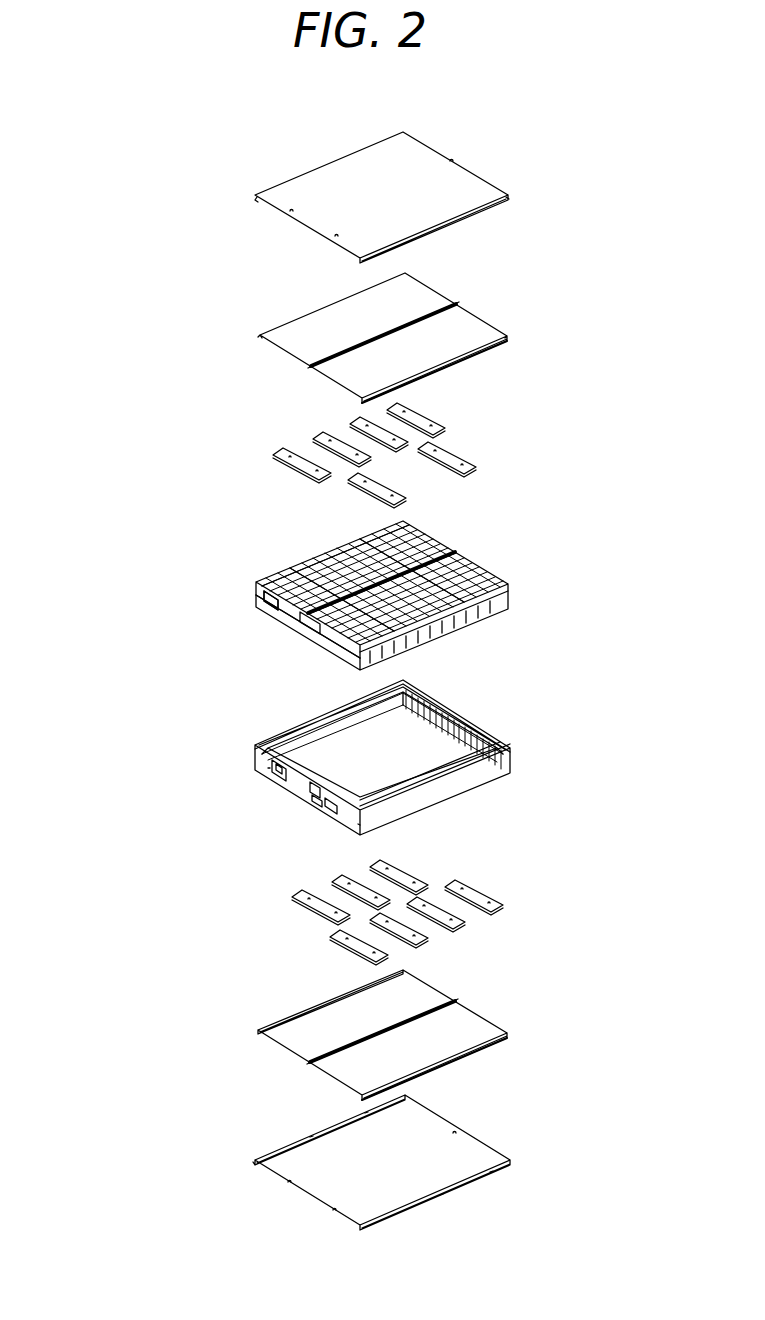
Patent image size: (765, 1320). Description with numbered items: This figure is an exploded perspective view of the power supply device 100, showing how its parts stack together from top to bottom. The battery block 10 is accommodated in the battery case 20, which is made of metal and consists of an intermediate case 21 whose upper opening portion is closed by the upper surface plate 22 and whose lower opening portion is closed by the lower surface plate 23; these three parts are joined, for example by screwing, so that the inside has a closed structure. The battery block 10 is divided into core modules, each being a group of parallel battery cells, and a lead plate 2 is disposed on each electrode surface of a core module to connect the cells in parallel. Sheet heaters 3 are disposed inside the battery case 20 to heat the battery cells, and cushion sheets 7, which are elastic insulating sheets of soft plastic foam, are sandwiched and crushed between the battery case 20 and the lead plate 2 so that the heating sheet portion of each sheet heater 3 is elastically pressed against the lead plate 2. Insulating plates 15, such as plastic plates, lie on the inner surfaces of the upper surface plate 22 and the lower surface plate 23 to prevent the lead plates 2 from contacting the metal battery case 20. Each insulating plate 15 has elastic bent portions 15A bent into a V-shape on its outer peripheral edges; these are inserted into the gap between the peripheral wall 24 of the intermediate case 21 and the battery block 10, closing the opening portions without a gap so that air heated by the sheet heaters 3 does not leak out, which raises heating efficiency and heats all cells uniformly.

The power supply device 100 is at (198, 178).
The battery case 20 is at (613, 271).
The upper surface plate 22 is at (432, 208).
The insulating plate 15 is at (356, 371).
The elastic bent portion 15A is at (456, 356).
The cushion sheet 7 is at (303, 466).
The battery block 10 is at (309, 596).
The lead plate 2 is at (305, 557).
The sheet heater 3 is at (279, 610).
The intermediate case 21 is at (402, 768).
The peripheral wall 24 is at (308, 737).
The lower surface plate 23 is at (427, 1133).